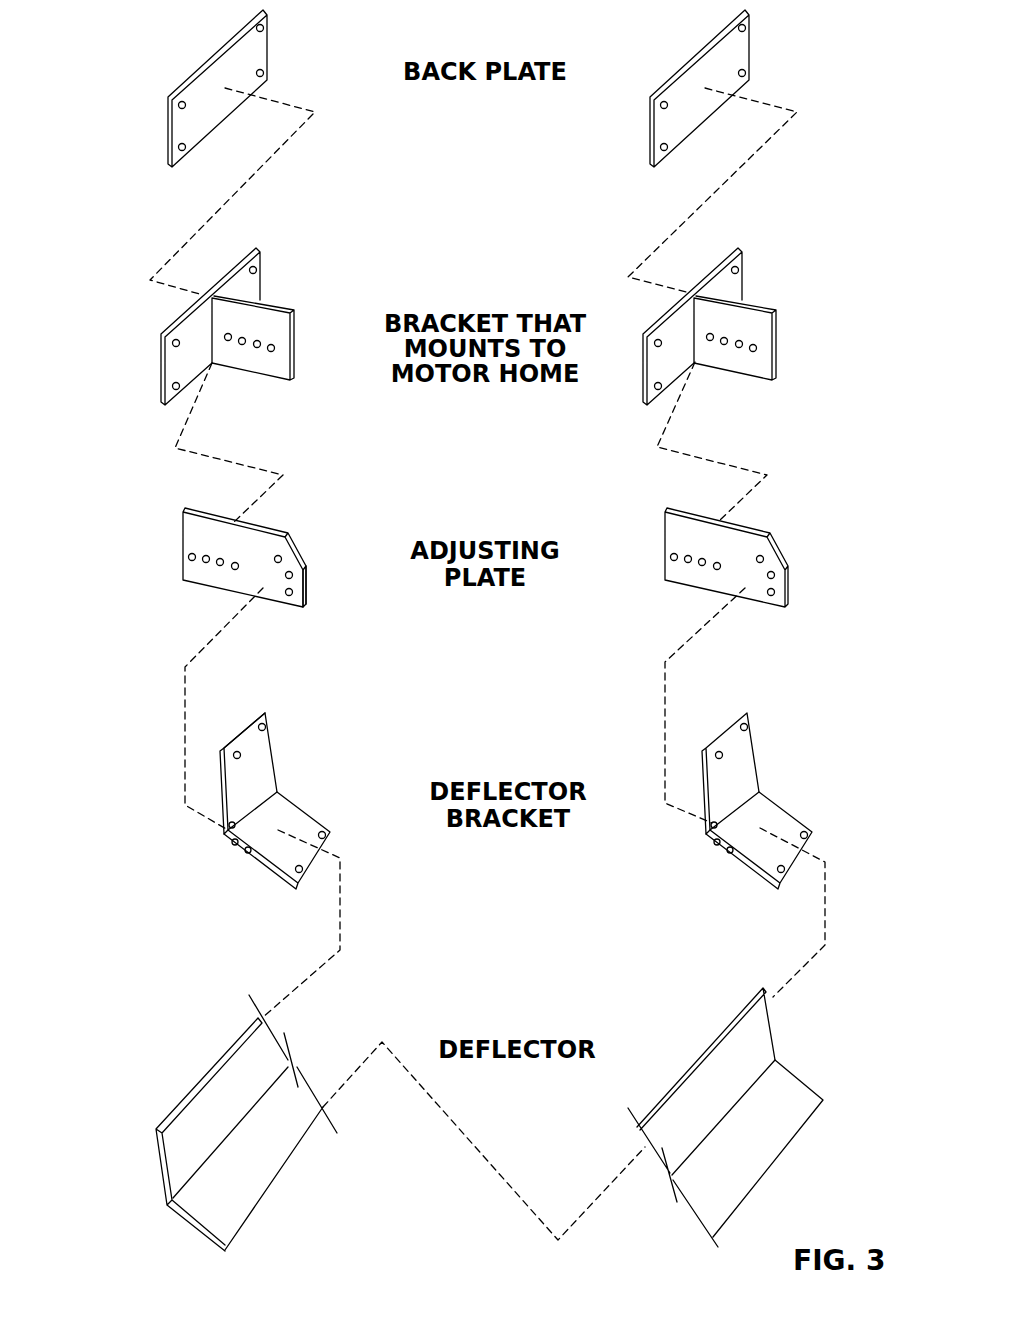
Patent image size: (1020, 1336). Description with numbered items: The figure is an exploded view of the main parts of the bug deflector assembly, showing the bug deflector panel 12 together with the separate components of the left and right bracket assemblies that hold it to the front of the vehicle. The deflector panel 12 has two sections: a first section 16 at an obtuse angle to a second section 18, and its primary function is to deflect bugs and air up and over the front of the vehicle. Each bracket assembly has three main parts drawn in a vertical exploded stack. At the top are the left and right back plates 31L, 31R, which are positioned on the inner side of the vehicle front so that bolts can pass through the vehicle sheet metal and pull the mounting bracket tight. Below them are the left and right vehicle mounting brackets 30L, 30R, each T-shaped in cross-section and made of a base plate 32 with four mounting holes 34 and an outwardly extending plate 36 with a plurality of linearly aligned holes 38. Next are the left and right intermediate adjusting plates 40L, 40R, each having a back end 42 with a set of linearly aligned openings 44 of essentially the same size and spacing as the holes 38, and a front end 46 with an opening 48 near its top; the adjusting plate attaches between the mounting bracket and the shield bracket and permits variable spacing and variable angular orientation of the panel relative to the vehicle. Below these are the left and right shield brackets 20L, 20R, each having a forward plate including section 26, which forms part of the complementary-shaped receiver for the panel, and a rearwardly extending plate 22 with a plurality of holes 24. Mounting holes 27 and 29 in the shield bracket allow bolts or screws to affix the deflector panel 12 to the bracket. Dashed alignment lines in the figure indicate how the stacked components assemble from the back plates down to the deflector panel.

The bug deflector panel 12 is at (517, 1119).
The first section 16 is at (227, 1097).
The second section 18 is at (259, 1160).
The left shield bracket 20L is at (253, 787).
The right shield bracket 20R is at (776, 772).
The rearwardly extending plate 22 is at (257, 857).
The holes 24 is at (248, 850).
The forward plate section 26 is at (250, 775).
The mounting holes 27 is at (262, 713).
The mounting holes 29 is at (303, 870).
The left vehicle mounting bracket 30L is at (223, 330).
The right vehicle mounting bracket 30R is at (755, 272).
The left back plate 31L is at (268, 50).
The right back plate 31R is at (750, 50).
The base plate 32 is at (235, 290).
The mounting holes 34 is at (90, 362).
The outwardly extending plate 36 is at (275, 372).
The linearly aligned holes 38 is at (271, 352).
The left intermediate adjusting plate 40L is at (220, 573).
The right intermediate adjusting plate 40R is at (756, 520).
The back end 42 is at (183, 573).
The linearly aligned openings 44 is at (235, 570).
The front end 46 is at (307, 602).
The opening 48 is at (297, 592).